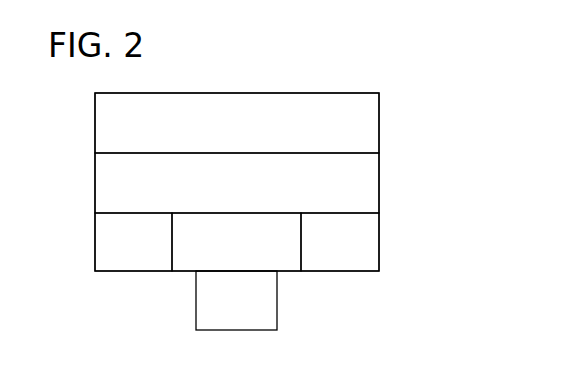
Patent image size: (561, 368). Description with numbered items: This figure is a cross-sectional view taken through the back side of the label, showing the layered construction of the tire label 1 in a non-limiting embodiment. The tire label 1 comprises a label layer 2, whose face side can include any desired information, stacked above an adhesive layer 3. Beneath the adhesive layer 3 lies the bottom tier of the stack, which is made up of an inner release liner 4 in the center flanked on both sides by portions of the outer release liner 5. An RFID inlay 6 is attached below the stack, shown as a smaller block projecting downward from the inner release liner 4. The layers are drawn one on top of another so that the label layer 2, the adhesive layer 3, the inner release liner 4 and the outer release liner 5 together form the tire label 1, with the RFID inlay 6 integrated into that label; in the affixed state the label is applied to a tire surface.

The tire label 1 is at (462, 88).
The label layer 2 is at (367, 123).
The adhesive layer 3 is at (367, 183).
The inner release liner 4 is at (283, 238).
The outer release liner 5 is at (107, 243).
The RFID inlay 6 is at (266, 302).